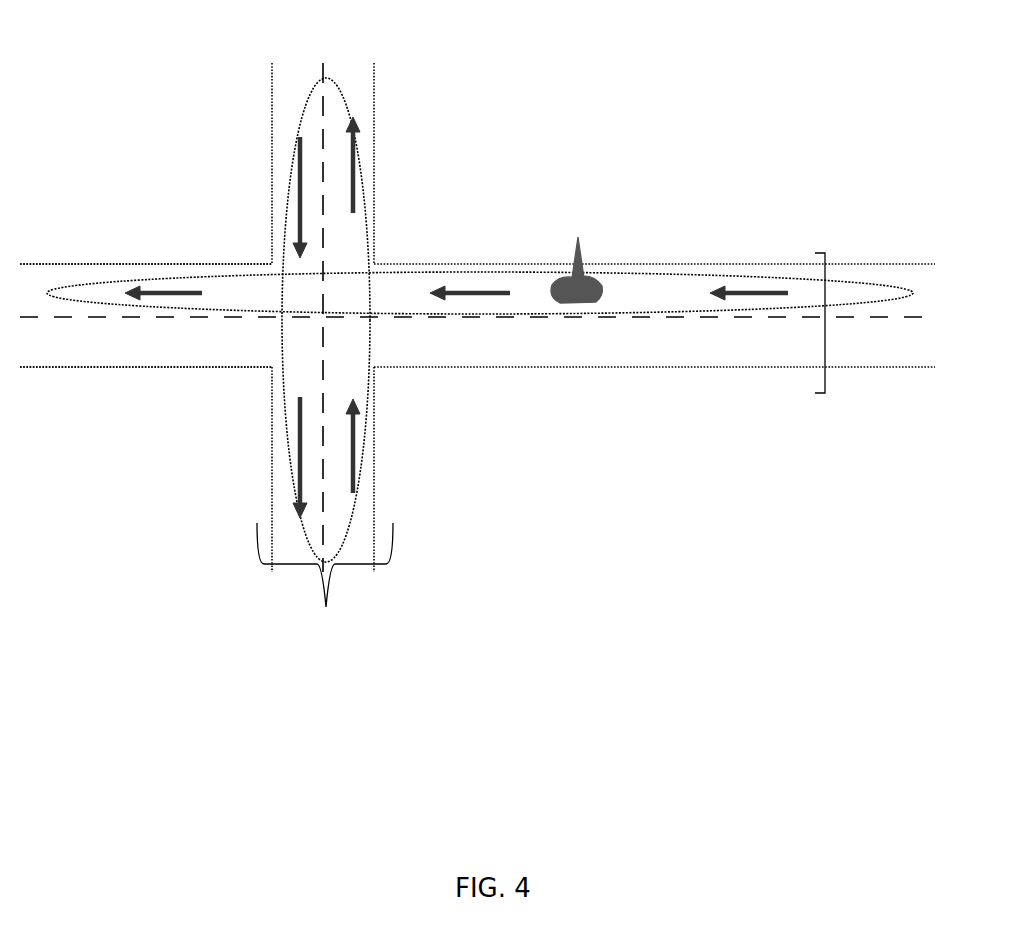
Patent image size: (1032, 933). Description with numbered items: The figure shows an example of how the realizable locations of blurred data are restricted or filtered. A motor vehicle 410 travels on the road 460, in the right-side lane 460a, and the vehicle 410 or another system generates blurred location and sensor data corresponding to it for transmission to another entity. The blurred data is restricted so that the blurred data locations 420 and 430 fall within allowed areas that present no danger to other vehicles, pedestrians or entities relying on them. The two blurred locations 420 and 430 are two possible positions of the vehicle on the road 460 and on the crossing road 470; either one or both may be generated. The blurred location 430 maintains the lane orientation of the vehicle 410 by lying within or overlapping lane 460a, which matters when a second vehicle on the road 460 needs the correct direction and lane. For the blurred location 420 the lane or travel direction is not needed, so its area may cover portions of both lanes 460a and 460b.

The motor vehicle 410 is at (578, 280).
The blurred location 420 is at (358, 235).
The blurred location 430 is at (395, 303).
The road 460 is at (825, 322).
The lane 460a is at (33, 278).
The lane 460b is at (232, 334).
The road 470 is at (326, 612).